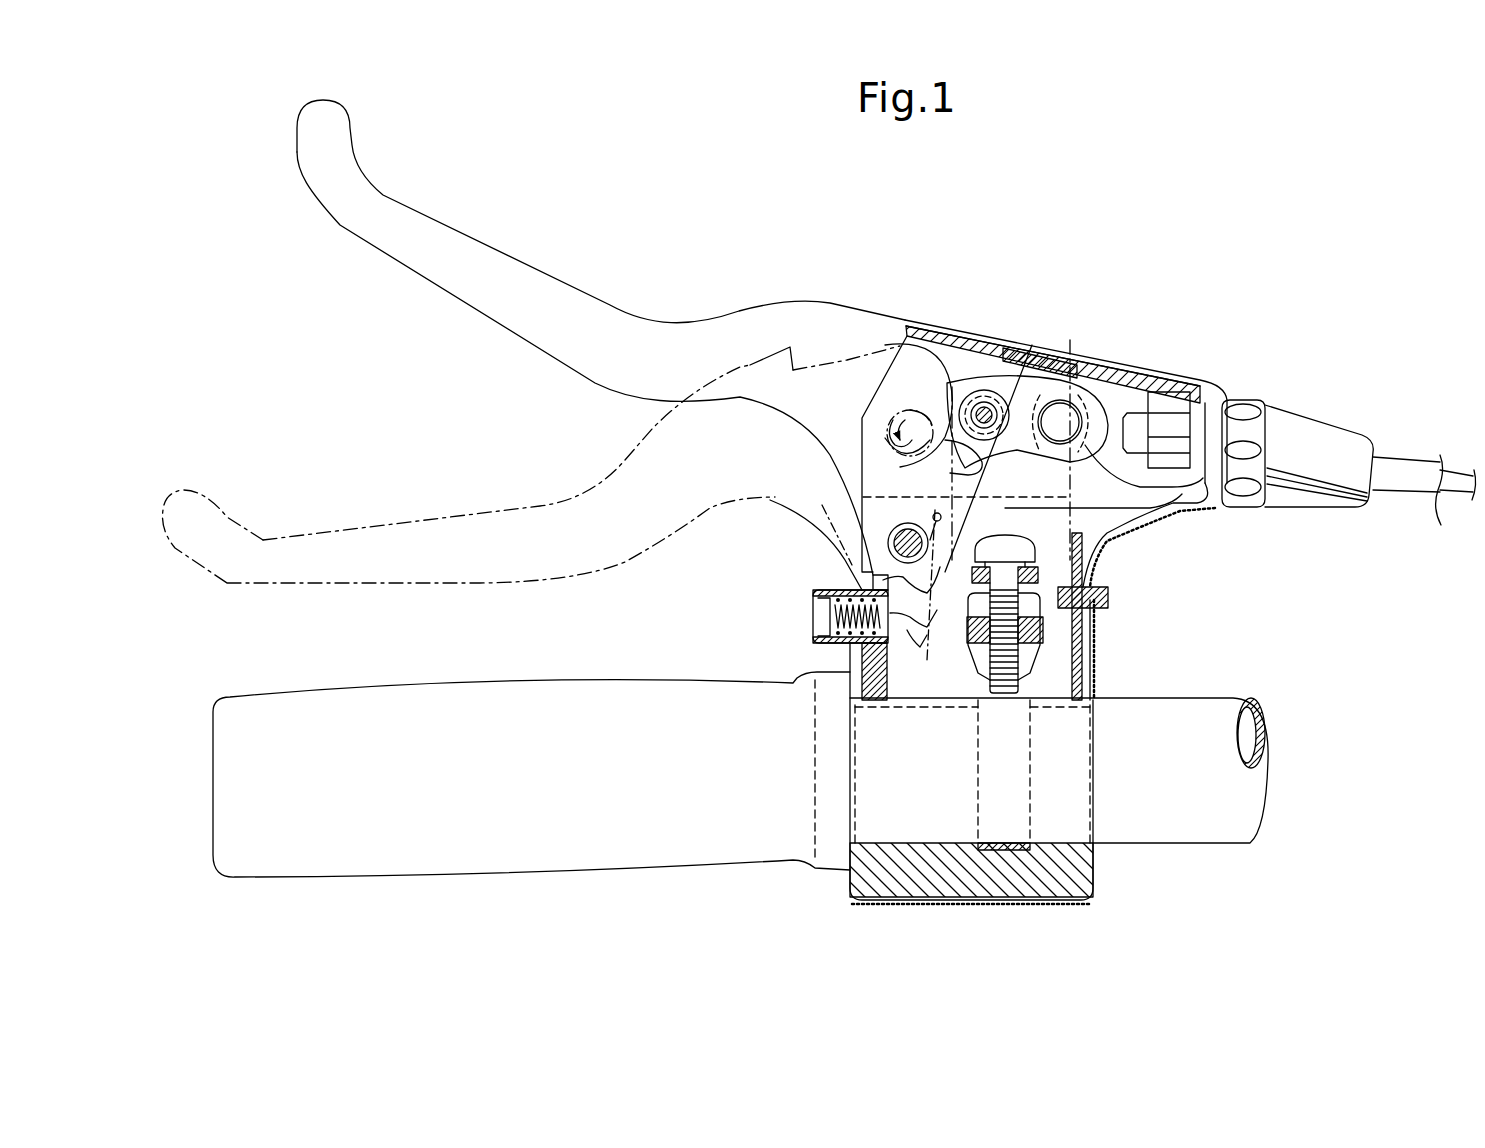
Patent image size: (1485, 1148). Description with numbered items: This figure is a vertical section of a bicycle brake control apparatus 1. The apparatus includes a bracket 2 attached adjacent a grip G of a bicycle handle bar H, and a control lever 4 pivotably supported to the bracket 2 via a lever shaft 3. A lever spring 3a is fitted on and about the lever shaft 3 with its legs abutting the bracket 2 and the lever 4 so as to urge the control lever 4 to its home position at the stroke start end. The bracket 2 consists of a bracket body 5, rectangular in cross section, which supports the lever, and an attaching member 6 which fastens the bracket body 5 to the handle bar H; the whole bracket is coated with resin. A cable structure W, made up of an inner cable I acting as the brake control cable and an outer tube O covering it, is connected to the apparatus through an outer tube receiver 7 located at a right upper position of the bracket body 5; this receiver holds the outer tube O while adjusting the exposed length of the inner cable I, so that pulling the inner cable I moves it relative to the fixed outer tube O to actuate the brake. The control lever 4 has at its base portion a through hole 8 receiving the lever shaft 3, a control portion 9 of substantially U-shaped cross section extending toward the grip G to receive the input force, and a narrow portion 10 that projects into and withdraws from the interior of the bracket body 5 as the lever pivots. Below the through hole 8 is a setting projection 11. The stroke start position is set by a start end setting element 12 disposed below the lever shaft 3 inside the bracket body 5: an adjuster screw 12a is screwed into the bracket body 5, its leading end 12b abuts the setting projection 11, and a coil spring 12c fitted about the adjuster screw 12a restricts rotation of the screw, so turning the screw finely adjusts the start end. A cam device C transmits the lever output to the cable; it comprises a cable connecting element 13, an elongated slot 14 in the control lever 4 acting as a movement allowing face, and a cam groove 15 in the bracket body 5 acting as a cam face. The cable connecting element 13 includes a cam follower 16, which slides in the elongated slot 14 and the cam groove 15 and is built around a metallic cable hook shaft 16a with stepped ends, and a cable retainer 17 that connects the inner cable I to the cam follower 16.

The brake control apparatus 1 is at (1240, 258).
The bracket 2 is at (1165, 725).
The lever shaft 3 is at (887, 542).
The lever spring 3a is at (888, 532).
The control lever 4 is at (607, 277).
The bracket body 5 is at (1097, 612).
The attaching member 6 is at (1033, 778).
The outer tube receiver 7 is at (1349, 481).
The through hole 8 is at (975, 195).
The control portion 9 is at (421, 213).
The narrow portion 10 is at (897, 362).
The projection 11 is at (940, 625).
The start end setting element 12 is at (762, 629).
The adjuster screw 12a is at (818, 622).
The leading end 12b is at (843, 650).
The coil spring 12c is at (825, 590).
The cable connecting element 13 is at (1059, 240).
The elongated slot 14 is at (972, 457).
The cam groove 15 is at (885, 422).
The cam follower 16 is at (985, 388).
The cable hook shaft 16a is at (971, 389).
The cable retainer 17 is at (1043, 382).
The cam device C is at (1090, 343).
The grip G is at (505, 872).
The handle bar H is at (1228, 698).
The outer tube O is at (1390, 487).
The inner cable I is at (1445, 485).
The cable structure W is at (1368, 598).